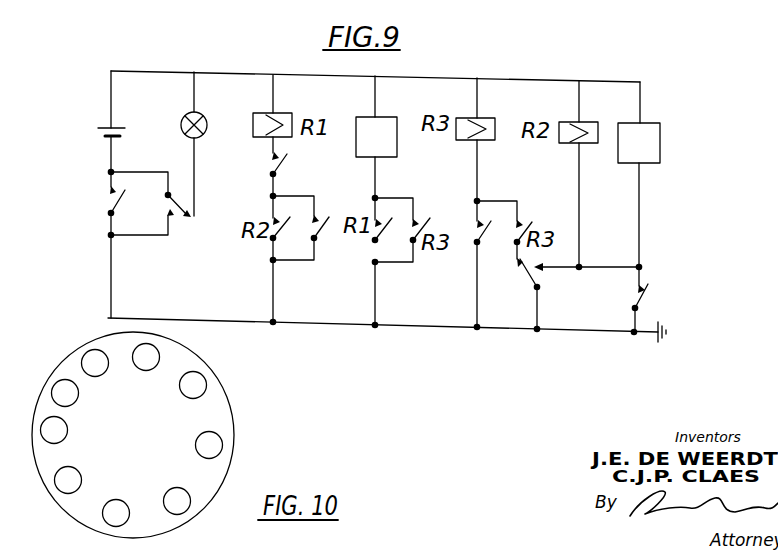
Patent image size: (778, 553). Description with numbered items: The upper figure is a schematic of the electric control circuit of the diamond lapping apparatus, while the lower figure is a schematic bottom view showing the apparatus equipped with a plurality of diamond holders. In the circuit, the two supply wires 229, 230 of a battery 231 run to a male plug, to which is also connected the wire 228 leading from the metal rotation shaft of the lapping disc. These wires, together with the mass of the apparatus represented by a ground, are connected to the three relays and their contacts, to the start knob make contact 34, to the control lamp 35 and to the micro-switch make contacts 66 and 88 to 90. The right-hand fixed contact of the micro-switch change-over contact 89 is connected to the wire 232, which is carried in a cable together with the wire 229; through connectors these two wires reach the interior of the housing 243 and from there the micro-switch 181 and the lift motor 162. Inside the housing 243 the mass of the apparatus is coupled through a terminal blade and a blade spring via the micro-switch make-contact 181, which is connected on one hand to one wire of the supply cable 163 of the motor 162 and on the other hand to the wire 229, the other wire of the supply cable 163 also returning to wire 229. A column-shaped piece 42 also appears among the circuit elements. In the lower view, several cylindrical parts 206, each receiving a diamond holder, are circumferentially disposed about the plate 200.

In FIG. 9, the supply wire 229 is at (111, 100).
In FIG. 9, the battery 231 is at (104, 137).
In FIG. 9, the supply wire 230 is at (111, 158).
In FIG. 9, the start knob make contact 34 is at (100, 203).
In FIG. 9, the control lamp 35 is at (181, 125).
In FIG. 9, the micro-switch make contact 66 is at (170, 204).
In FIG. 9, the micro-switch make contact 88 is at (295, 160).
In FIG. 9, the micro-switch make contact 90 is at (311, 241).
In FIG. 9, the column-shaped piece 42 is at (394, 137).
In FIG. 9, the wire 228 is at (477, 163).
In FIG. 9, the housing 243 is at (463, 229).
In FIG. 9, the micro-switch change-over contact 89 is at (517, 277).
In FIG. 9, the lift motor 162 is at (660, 143).
In FIG. 9, the supply cable 163 is at (639, 205).
In FIG. 9, the wire 232 is at (605, 267).
In FIG. 9, the micro-switch make-contact 181 is at (660, 301).
In FIG. 10, the plate 200 is at (233, 444).
In FIG. 10, the cylindrical part 206 is at (164, 359).